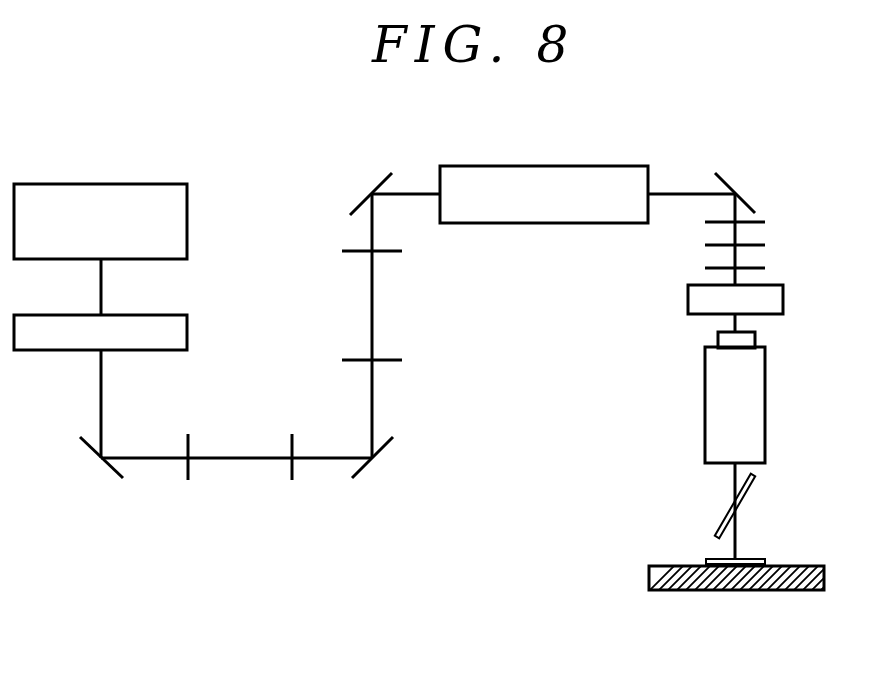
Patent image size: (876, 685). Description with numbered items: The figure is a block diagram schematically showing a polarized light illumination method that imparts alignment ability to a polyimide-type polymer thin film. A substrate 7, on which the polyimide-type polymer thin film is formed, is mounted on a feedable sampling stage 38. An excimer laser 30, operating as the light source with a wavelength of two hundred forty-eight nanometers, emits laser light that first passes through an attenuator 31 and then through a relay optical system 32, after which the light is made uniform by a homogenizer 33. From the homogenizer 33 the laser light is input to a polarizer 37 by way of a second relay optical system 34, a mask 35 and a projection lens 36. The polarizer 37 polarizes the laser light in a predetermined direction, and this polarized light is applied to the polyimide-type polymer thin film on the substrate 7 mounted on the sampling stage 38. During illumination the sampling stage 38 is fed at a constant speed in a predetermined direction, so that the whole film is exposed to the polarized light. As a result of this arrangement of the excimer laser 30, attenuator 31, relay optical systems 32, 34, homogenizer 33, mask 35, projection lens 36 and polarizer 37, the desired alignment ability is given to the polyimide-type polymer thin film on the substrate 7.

The excimer laser 30 is at (187, 223).
The attenuator 31 is at (187, 325).
The relay optical system 32 is at (312, 403).
The homogenizer 33 is at (512, 166).
The relay optical system 34 is at (766, 229).
The mask 35 is at (762, 308).
The projection lens 36 is at (765, 394).
The polarizer 37 is at (747, 503).
The substrate 7 is at (757, 558).
The sampling stage 38 is at (755, 590).